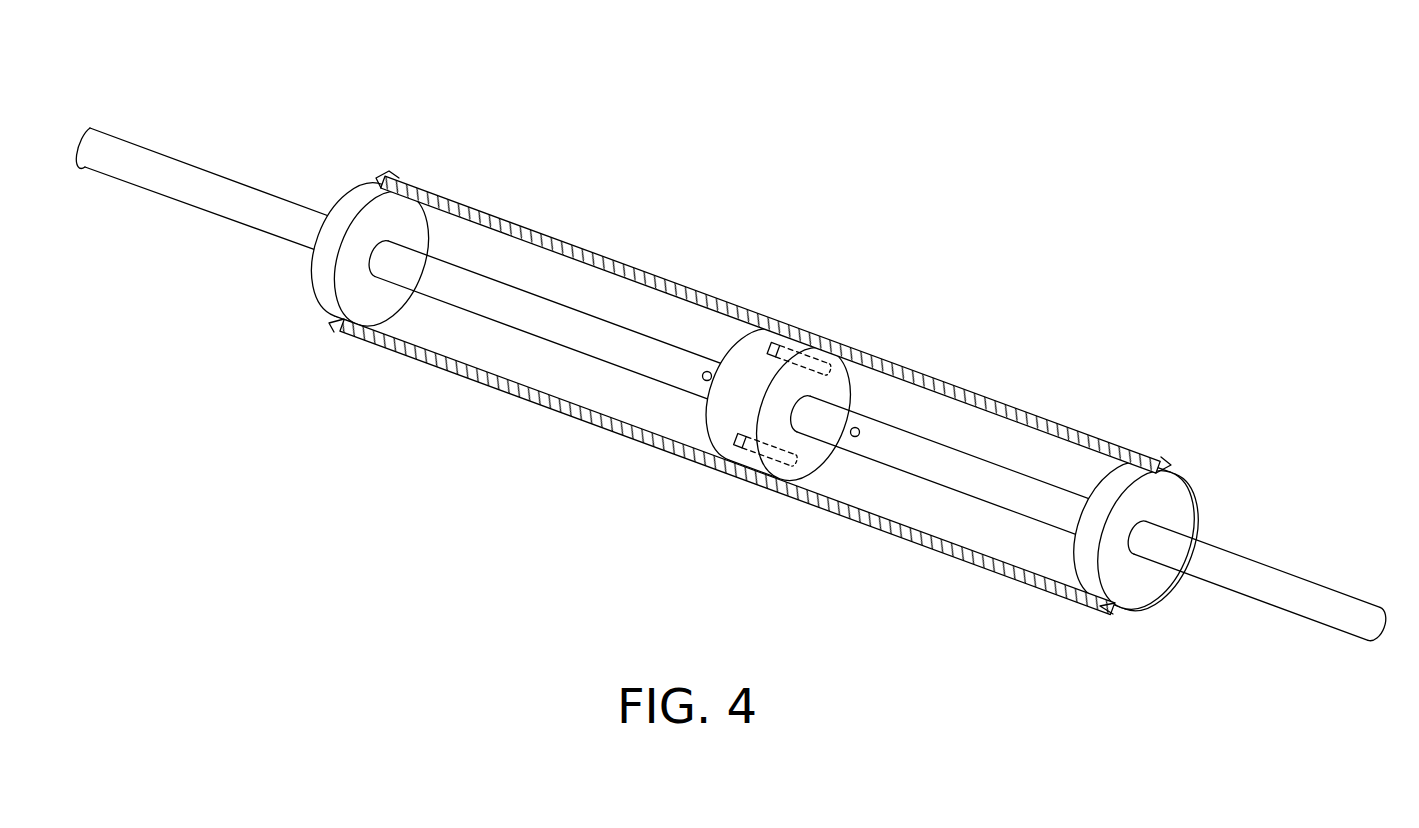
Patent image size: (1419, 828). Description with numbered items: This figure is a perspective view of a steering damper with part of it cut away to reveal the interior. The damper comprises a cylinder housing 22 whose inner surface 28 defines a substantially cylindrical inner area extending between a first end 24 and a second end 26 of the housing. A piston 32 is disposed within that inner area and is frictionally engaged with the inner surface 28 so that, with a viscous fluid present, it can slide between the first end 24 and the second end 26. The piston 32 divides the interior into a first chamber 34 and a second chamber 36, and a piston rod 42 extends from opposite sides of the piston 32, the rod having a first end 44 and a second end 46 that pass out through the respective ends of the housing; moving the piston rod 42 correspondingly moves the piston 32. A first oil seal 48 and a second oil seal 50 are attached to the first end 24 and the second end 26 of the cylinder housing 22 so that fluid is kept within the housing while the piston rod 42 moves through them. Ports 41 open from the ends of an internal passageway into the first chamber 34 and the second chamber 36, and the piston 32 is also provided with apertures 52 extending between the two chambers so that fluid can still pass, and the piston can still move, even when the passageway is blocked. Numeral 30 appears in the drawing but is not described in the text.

The cylinder housing 22 is at (681, 278).
The first end 24 is at (410, 170).
The second end 26 is at (1165, 436).
The inner surface 28 is at (567, 388).
The first chamber 30 is at (421, 392).
The piston 32 is at (708, 424).
The first chamber 34 is at (575, 265).
The second chamber 36 is at (995, 422).
The ports 41 is at (709, 362).
The piston rod 42 is at (936, 466).
The first end 44 is at (82, 117).
The second end 46 is at (1400, 596).
The first oil seal 48 is at (323, 285).
The second oil seal 50 is at (1130, 594).
The apertures 52 is at (779, 342).